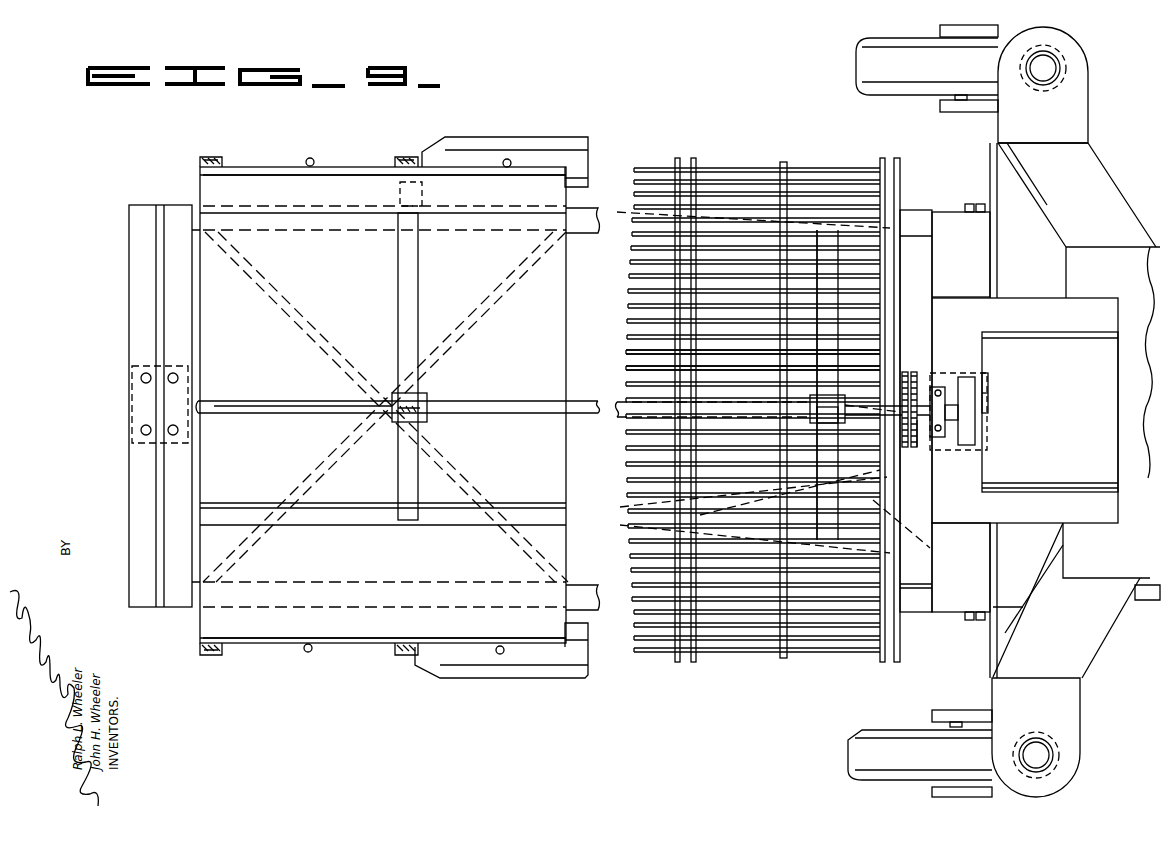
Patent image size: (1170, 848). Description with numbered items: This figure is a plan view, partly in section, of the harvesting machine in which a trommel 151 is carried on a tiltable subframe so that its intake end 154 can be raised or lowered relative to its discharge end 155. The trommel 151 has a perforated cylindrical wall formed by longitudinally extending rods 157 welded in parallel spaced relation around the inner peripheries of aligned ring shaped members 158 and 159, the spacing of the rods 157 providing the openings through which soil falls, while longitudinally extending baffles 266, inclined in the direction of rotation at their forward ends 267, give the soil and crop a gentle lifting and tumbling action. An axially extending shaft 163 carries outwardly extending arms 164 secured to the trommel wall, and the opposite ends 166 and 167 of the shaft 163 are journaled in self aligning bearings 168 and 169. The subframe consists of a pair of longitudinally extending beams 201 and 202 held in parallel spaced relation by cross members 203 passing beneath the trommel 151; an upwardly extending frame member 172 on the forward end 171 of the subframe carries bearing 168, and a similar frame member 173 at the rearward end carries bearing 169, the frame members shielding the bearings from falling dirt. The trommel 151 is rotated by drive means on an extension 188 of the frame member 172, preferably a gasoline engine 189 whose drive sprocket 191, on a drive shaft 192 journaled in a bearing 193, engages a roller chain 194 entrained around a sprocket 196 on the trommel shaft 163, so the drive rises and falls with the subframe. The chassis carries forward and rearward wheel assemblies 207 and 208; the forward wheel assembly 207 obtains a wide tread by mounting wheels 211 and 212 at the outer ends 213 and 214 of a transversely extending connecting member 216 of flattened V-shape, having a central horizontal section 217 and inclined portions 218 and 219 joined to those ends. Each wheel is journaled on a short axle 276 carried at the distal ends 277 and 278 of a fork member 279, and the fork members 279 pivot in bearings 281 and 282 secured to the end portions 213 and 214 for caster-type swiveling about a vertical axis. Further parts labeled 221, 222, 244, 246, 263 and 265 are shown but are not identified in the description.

The trommel 151 is at (760, 668).
The intake end 154 is at (880, 577).
The discharge end 155 is at (200, 335).
The rods 157 is at (390, 165).
The ring shaped member 158 is at (210, 157).
The ring shaped member 159 is at (310, 158).
The shaft 163 is at (497, 400).
The arms 164 is at (398, 300).
The end of shaft 166 is at (988, 406).
The end of shaft 167 is at (203, 413).
The self aligning bearing 168 is at (989, 380).
The self aligning bearing 169 is at (132, 400).
The forward end of subframe 171 is at (943, 210).
The frame member 172 is at (975, 263).
The frame member 173 is at (140, 268).
The extension of frame member 188 is at (1073, 326).
The gasoline engine 189 is at (1088, 430).
The drive sprocket 191 is at (934, 387).
The drive shaft 192 is at (975, 425).
The bearing 193 is at (950, 421).
The roller chain 194 is at (917, 447).
The sprocket 196 is at (912, 372).
The beam 201 is at (600, 568).
The beam 202 is at (572, 235).
The cross members 203 is at (480, 302).
The forward wheel assembly 207 is at (860, 40).
The rearward wheel assembly 208 is at (470, 133).
The wheel 211 is at (850, 746).
The wheel 212 is at (858, 60).
The outer end of connecting member 213 is at (1075, 727).
The outer end of connecting member 214 is at (1072, 93).
The connecting member 216 is at (1098, 144).
The central horizontal section 217 is at (1043, 563).
The inclined portion 218 is at (1005, 633).
The inclined portion 219 is at (1000, 182).
The lower beam 221 is at (505, 678).
The upper beam 222 is at (520, 140).
The frame member 244 is at (1146, 210).
The lower stub 246 is at (1149, 607).
The support block 263 is at (1123, 285).
The diagonal arms 265 is at (1098, 195).
The baffles 266 is at (523, 198).
The forward ends of baffles 267 is at (883, 162).
The short axle 276 is at (962, 100).
The distal end of fork member 277 is at (940, 31).
The distal end of fork member 278 is at (940, 108).
The fork member 279 is at (1028, 32).
The bearing 281 is at (1066, 66).
The bearing 282 is at (1060, 757).